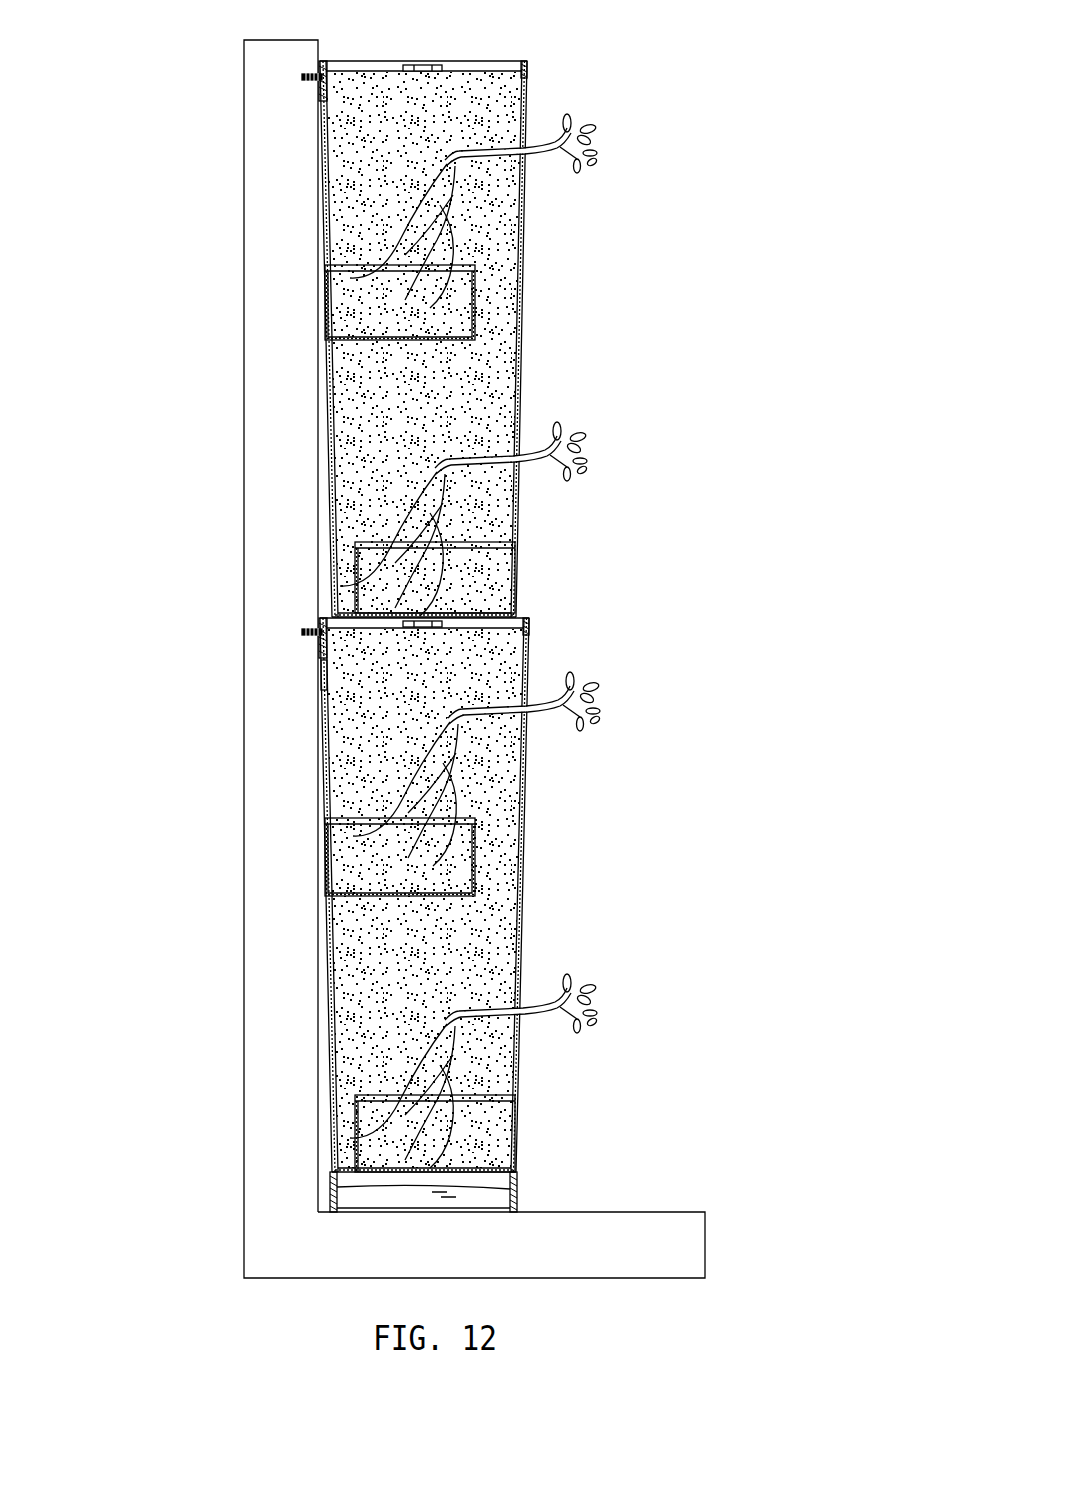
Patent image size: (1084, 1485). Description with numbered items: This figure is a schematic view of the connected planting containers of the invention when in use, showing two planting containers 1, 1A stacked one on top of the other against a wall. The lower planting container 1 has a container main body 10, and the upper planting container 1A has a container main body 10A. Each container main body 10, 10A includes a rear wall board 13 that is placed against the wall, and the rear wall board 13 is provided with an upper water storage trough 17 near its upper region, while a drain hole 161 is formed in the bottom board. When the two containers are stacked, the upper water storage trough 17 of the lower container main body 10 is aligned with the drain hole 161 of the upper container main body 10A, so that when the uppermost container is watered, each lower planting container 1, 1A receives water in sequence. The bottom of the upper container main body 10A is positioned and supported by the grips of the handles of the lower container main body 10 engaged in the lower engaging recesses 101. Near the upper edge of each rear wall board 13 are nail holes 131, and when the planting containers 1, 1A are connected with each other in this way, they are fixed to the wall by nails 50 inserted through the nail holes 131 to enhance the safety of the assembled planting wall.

The planting container 1 is at (373, 915).
The planting container 1A is at (366, 339).
The container main body 10 is at (330, 995).
The container main body 10A is at (325, 440).
The lower engaging recesses 101 is at (330, 612).
The rear wall board 13 is at (325, 168).
The nail holes 131 is at (312, 100).
The drain hole 161 is at (322, 665).
The upper water storage trough 17 is at (350, 897).
The nails 50 is at (308, 77).